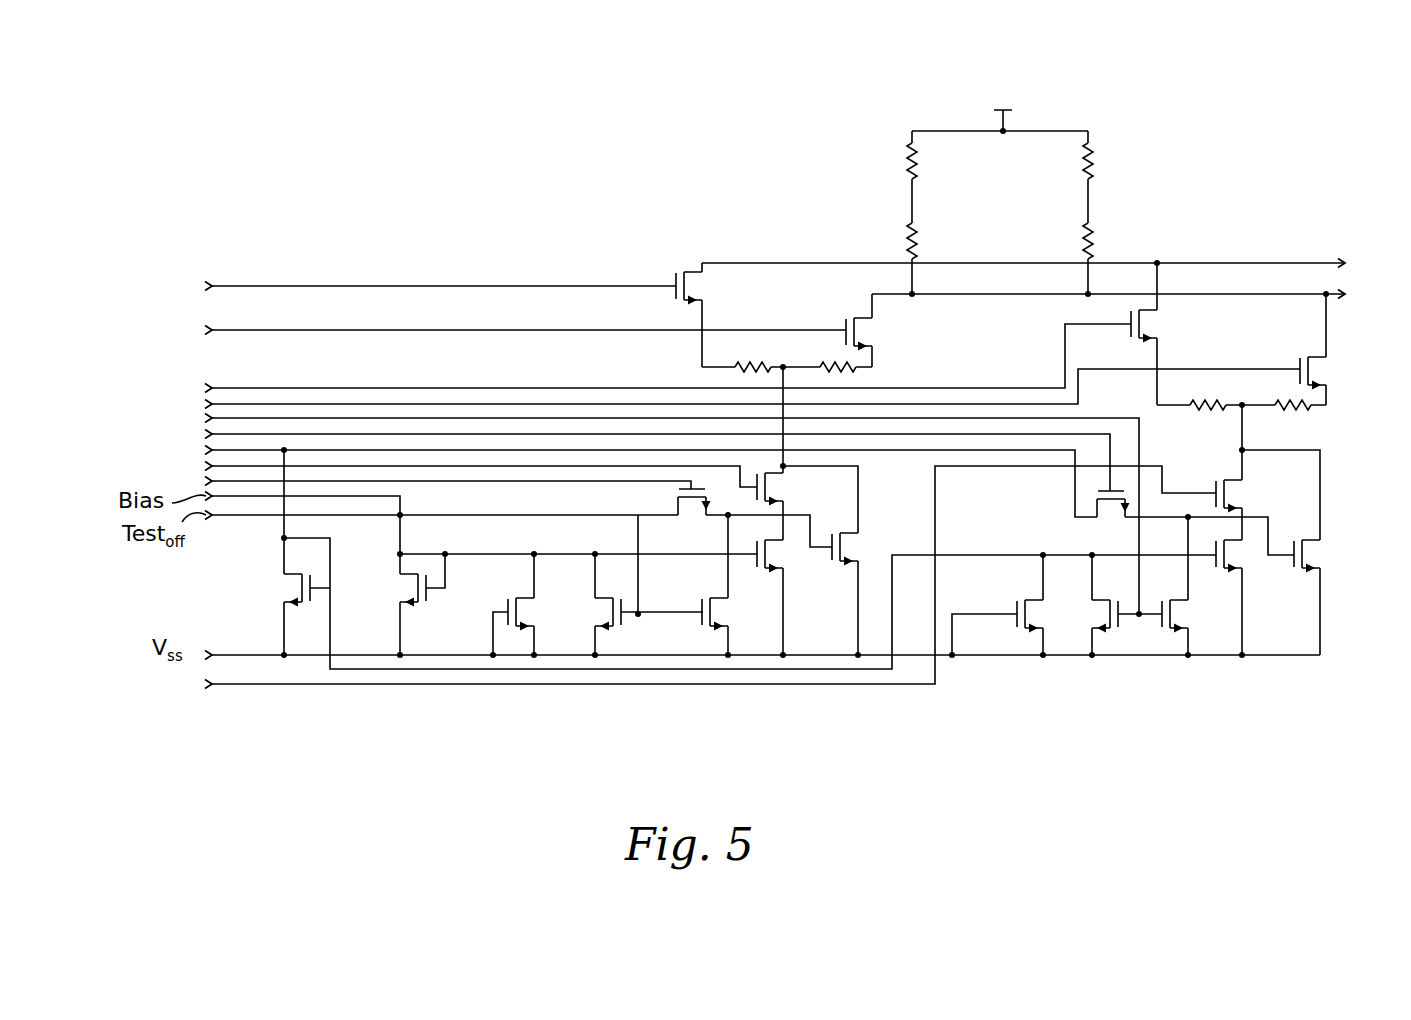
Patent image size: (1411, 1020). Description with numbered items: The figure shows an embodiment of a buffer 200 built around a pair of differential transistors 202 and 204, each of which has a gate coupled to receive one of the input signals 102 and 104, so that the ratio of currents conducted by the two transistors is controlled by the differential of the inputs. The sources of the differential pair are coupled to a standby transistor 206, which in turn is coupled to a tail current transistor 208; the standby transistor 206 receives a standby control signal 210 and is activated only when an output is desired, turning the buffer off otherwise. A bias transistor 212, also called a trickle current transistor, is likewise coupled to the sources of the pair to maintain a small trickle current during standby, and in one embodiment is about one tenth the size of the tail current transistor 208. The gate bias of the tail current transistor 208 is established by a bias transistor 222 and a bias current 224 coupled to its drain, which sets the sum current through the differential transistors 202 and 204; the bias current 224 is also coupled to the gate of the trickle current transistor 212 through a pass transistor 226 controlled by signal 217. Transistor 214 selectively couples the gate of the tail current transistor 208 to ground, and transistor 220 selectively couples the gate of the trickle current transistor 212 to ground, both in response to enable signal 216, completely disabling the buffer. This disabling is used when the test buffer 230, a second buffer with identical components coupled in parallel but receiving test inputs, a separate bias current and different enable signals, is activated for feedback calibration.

The buffer 200 is at (1218, 243).
The test buffer 230 is at (777, 242).
The input signal 102 is at (206, 387).
The input signal 104 is at (206, 403).
The enable signal 216 is at (206, 418).
The signal 217 is at (206, 434).
The bias current 224 is at (206, 450).
The standby control signal 210 is at (300, 685).
The bias transistor 222 is at (288, 586).
The differential transistor 202 is at (1157, 323).
The differential transistor 204 is at (1322, 368).
The standby transistor 206 is at (1243, 500).
The tail current transistor 208 is at (1240, 557).
The bias transistor 212 is at (1320, 557).
The transistor 214 is at (1095, 618).
The transistor 220 is at (1190, 619).
The pass transistor 226 is at (1110, 513).